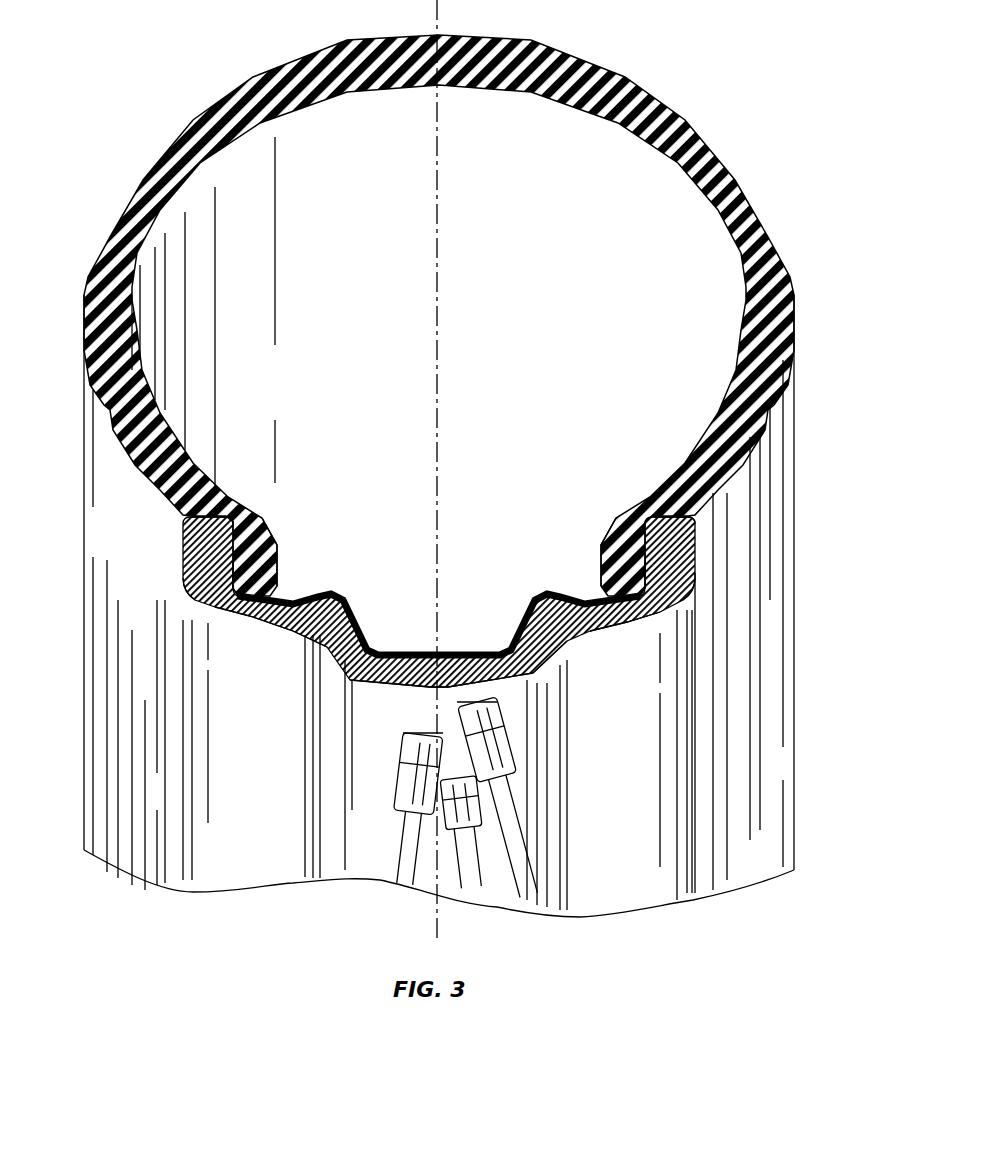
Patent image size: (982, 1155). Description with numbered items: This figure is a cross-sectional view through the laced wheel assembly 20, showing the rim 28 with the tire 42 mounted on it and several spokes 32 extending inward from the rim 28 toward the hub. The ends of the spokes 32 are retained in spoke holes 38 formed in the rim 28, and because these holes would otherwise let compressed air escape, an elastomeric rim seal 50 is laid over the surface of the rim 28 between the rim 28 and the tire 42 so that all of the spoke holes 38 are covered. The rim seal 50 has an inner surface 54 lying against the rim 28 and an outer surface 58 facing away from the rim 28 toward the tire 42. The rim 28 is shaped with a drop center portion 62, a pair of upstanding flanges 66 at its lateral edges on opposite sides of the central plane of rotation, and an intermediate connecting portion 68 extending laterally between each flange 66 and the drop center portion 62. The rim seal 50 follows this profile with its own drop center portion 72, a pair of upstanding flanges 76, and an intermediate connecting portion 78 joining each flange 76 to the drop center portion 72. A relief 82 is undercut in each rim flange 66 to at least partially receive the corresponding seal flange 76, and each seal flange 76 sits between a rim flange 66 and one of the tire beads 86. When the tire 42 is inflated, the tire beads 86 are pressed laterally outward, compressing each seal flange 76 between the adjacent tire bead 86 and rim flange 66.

The laced wheel assembly 20 is at (757, 150).
The tire 42 is at (157, 190).
The rim 28 is at (247, 625).
The spokes 32 is at (477, 853).
The spoke holes 38 is at (410, 733).
The rim seal 50 is at (533, 607).
The inner surface 54 is at (595, 618).
The outer surface 58 is at (487, 646).
The drop center portion 62 is at (505, 685).
The upstanding flanges 66 is at (200, 537).
The intermediate connecting portion 68 is at (287, 633).
The drop center portion 72 is at (418, 652).
The upstanding flanges 76 is at (193, 577).
The intermediate connecting portion 78 is at (293, 597).
The relief 82 is at (227, 565).
The tire beads 86 is at (267, 590).